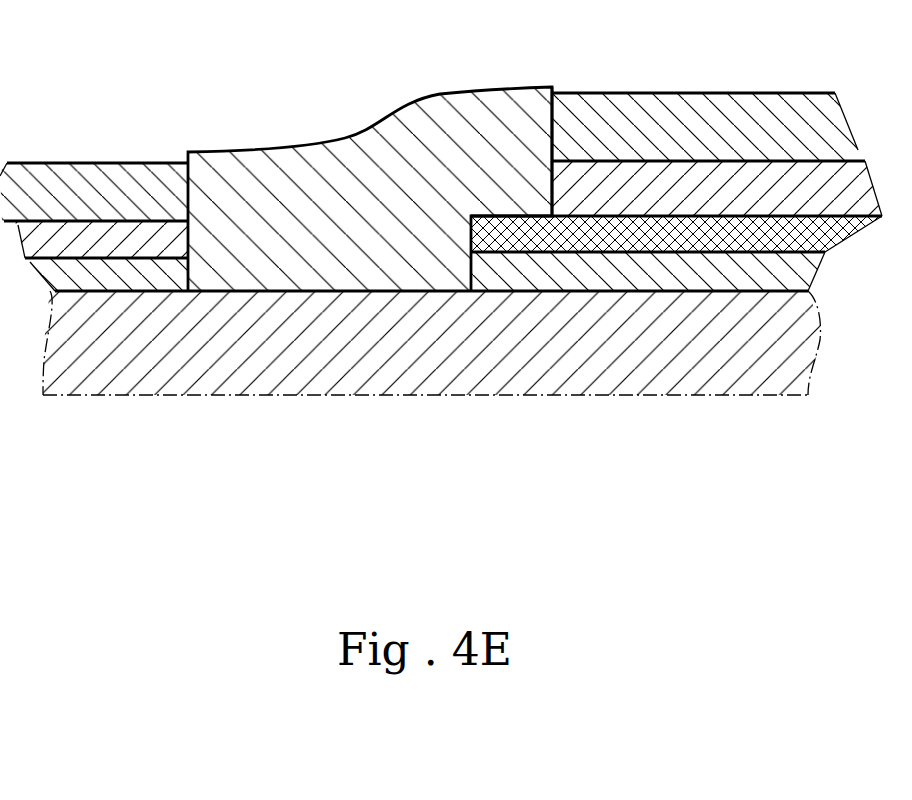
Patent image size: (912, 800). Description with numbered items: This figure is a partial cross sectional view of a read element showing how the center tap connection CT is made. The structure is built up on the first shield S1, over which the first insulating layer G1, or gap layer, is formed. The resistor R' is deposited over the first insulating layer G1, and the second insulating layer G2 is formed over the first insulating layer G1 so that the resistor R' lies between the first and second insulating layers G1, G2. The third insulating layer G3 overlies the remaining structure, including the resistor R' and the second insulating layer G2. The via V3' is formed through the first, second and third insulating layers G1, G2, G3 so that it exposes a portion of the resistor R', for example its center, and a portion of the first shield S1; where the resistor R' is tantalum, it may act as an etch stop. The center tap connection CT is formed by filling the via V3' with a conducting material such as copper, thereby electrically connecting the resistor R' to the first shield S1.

The center tap connection CT is at (360, 133).
The via V3' is at (607, 110).
The third insulating layer G3 is at (116, 203).
The second insulating layer G2 is at (448, 209).
The first insulating layer G1 is at (116, 285).
The resistor R' is at (676, 234).
The first shield S1 is at (354, 346).